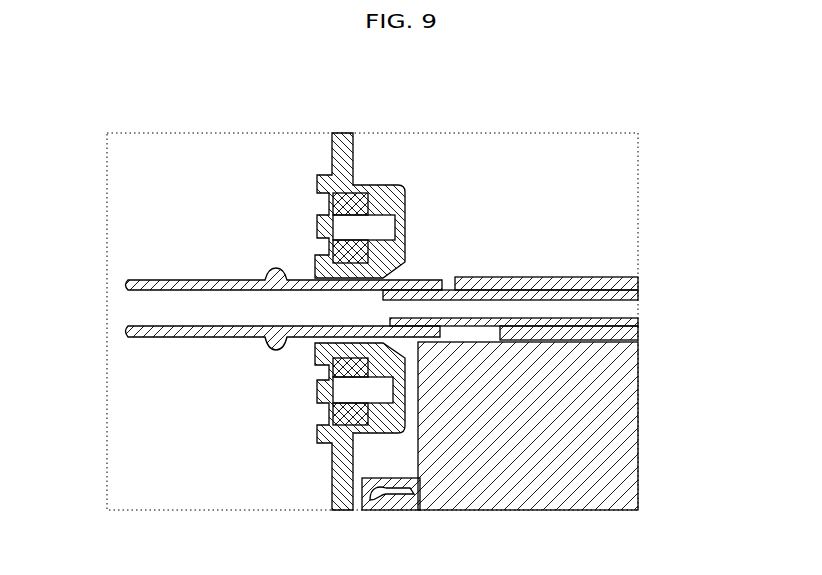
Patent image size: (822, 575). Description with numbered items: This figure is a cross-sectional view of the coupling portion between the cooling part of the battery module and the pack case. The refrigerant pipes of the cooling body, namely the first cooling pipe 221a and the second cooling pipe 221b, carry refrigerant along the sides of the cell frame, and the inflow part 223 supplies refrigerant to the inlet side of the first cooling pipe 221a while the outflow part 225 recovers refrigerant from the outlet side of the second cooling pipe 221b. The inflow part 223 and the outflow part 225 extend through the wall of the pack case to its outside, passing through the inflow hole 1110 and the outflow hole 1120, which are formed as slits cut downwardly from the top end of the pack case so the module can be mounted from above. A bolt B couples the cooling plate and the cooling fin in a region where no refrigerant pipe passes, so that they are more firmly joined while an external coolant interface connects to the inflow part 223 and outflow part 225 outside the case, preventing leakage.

The bolt B is at (322, 214).
The inflow part 223 is at (226, 283).
The outflow part 225 is at (138, 274).
The first cooling pipe 221a is at (589, 288).
The second cooling pipe 221b is at (583, 265).
The inflow hole 1110 is at (341, 448).
The outflow hole 1120 is at (315, 357).